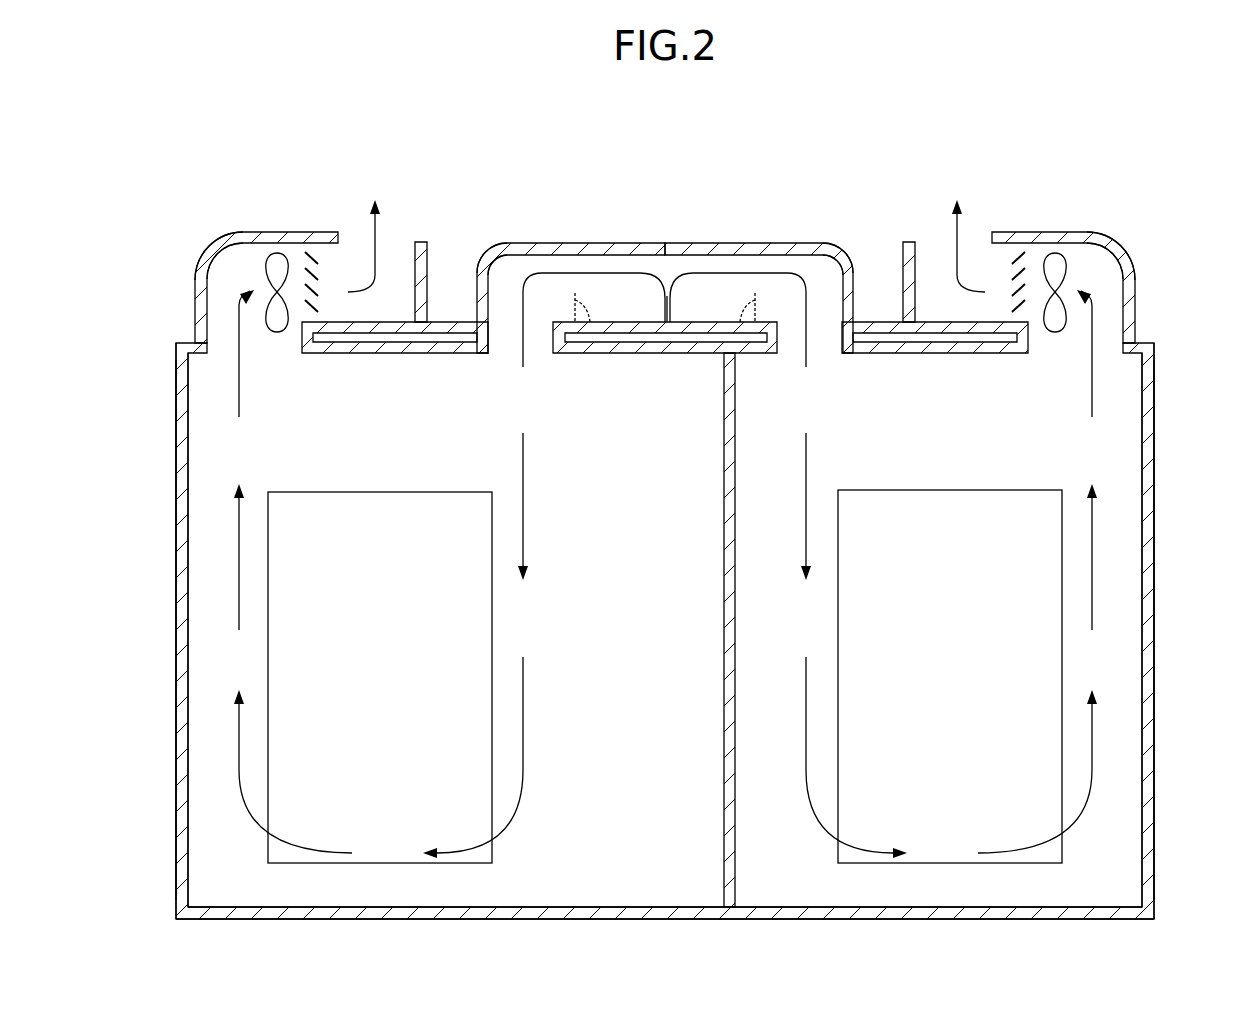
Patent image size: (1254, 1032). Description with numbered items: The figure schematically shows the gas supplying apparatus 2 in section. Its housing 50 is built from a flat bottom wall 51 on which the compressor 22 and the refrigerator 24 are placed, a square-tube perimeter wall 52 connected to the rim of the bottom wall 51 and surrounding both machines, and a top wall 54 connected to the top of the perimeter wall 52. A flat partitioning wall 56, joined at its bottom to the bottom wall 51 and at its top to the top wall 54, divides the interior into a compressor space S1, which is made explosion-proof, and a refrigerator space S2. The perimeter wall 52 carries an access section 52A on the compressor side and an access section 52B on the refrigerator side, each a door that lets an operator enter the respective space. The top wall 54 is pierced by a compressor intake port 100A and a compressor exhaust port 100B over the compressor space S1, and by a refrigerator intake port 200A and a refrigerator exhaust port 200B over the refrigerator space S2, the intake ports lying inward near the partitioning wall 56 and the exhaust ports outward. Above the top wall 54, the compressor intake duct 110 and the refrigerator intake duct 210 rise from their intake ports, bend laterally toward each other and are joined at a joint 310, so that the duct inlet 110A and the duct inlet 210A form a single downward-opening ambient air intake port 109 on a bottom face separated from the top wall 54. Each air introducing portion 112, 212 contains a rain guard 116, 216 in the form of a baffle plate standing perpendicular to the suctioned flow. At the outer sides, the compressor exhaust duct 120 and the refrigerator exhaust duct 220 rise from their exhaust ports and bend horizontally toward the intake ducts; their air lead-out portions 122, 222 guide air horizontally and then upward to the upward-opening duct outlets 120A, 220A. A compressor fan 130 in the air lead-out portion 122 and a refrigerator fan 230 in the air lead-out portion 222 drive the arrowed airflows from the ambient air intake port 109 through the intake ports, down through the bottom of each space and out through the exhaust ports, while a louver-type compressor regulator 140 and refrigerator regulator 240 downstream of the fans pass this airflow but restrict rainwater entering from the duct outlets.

The gas supplying apparatus 2 is at (1142, 138).
The housing 50 is at (1162, 350).
The bottom wall 51 is at (620, 907).
The perimeter wall 52 is at (176, 440).
The access section 52A is at (176, 566).
The access section 52B is at (1154, 582).
The top wall 54 is at (443, 343).
The partitioning wall 56 is at (724, 596).
The compressor 22 is at (422, 492).
The refrigerator 24 is at (940, 490).
The ambient air intake port 109 is at (690, 353).
The compressor intake duct 110 is at (565, 243).
The duct inlet 110A is at (627, 327).
The air introducing portion 112 is at (552, 243).
The compressor rain guard 116 is at (592, 353).
The compressor exhaust duct 120 is at (290, 232).
The duct outlet 120A is at (395, 243).
The air lead-out portion 122 is at (216, 250).
The compressor fan 130 is at (266, 268).
The compressor regulator 140 is at (318, 276).
The compressor intake port 100A is at (543, 355).
The compressor exhaust port 100B is at (265, 355).
The refrigerator intake duct 210 is at (773, 243).
The duct inlet 210A is at (703, 330).
The air introducing portion 212 is at (815, 245).
The refrigerator rain guard 216 is at (756, 353).
The refrigerator exhaust duct 220 is at (1018, 250).
The duct outlet 220A is at (935, 246).
The air lead-out portion 222 is at (1105, 246).
The refrigerator fan 230 is at (1070, 268).
The refrigerator regulator 240 is at (975, 292).
The refrigerator intake port 200A is at (830, 355).
The refrigerator exhaust port 200B is at (1062, 355).
The joint 310 is at (667, 325).
The compressor space S1 is at (368, 406).
The refrigerator space S2 is at (929, 406).